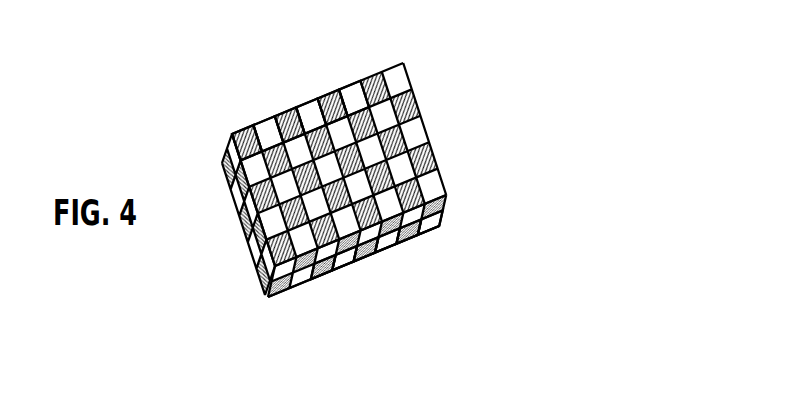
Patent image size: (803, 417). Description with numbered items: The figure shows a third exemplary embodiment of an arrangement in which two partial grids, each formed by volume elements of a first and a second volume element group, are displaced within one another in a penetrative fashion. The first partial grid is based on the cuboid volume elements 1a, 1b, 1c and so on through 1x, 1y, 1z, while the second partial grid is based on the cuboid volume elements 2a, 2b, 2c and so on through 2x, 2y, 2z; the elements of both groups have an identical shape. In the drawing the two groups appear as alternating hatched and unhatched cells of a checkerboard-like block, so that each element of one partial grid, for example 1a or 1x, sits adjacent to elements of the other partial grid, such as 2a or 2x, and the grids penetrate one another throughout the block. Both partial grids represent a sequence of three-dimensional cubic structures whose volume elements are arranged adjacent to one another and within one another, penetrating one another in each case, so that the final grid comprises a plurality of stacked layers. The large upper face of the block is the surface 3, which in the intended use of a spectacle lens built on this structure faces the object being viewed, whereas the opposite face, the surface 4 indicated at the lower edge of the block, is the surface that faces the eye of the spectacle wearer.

The surface 3 is at (412, 126).
The surface 4 is at (432, 233).
The cuboid volume element 1a is at (260, 130).
The cuboid volume element 1b is at (307, 103).
The cuboid volume element 1c is at (351, 88).
The cuboid volume element 1x is at (317, 278).
The cuboid volume element 1y is at (366, 247).
The cuboid volume element 1z is at (407, 238).
The cuboid volume element 2a is at (242, 135).
The cuboid volume element 2b is at (292, 112).
The cuboid volume element 2c is at (330, 99).
The cuboid volume element 2x is at (345, 260).
The cuboid volume element 2y is at (397, 242).
The cuboid volume element 2z is at (443, 227).